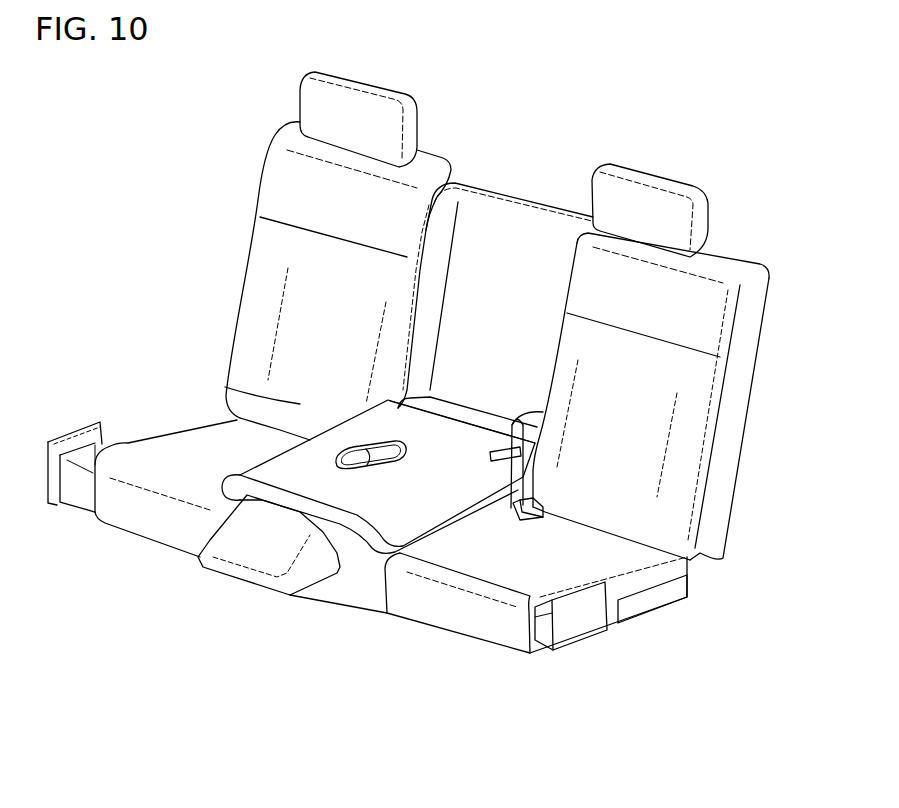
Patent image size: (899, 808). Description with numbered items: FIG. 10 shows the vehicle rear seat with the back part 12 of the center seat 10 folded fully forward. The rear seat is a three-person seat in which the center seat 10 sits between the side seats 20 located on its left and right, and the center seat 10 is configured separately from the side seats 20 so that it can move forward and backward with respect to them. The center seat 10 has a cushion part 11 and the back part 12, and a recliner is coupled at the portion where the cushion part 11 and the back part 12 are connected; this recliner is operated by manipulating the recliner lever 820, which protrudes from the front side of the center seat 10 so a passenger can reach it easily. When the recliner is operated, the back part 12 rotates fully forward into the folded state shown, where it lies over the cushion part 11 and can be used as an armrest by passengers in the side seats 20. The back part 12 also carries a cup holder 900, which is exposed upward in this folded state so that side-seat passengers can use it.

The center seat 10 is at (318, 606).
The cushion part 11 is at (358, 593).
The back part 12 is at (297, 472).
The side seats 20 is at (130, 540).
The recliner lever 820 is at (543, 412).
The cup holder 900 is at (373, 440).